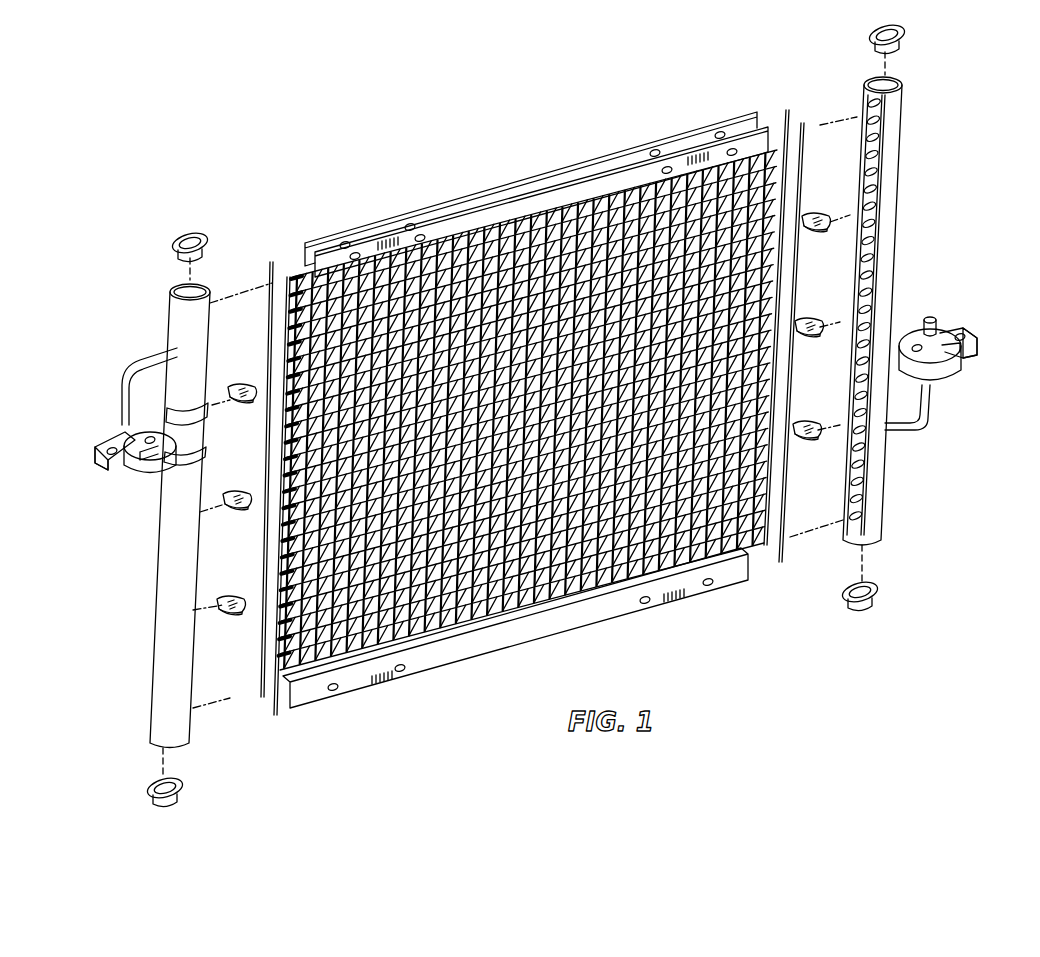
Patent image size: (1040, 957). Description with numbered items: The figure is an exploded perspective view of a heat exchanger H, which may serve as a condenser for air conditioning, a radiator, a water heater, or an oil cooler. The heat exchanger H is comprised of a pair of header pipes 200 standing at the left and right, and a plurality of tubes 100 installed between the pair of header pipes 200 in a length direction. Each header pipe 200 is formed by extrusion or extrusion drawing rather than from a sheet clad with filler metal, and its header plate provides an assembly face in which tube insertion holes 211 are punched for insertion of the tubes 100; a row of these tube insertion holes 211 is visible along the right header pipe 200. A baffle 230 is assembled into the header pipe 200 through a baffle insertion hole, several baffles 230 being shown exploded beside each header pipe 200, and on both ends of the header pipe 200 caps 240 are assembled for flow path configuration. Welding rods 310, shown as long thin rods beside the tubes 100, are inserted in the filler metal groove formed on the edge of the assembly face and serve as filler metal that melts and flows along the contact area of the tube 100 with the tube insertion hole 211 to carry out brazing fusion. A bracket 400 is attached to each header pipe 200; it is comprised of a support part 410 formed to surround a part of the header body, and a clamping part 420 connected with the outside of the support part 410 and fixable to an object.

The heat exchanger H is at (341, 143).
The tube 100 is at (283, 648).
The header pipe 200 is at (118, 637).
The tube insertion hole 211 is at (877, 168).
The baffle 230 is at (233, 400).
The cap 240 is at (192, 232).
The welding rod 310 is at (271, 258).
The bracket 400 is at (108, 410).
The support part 410 is at (163, 395).
The clamping part 420 is at (100, 463).